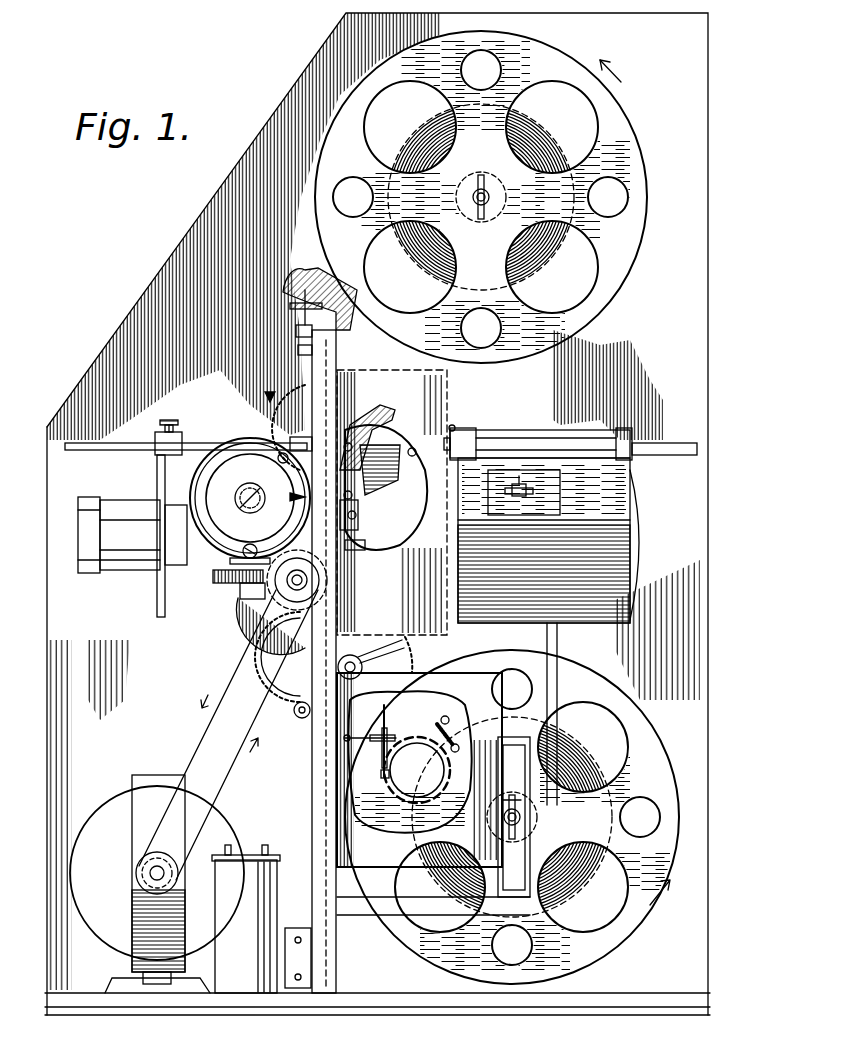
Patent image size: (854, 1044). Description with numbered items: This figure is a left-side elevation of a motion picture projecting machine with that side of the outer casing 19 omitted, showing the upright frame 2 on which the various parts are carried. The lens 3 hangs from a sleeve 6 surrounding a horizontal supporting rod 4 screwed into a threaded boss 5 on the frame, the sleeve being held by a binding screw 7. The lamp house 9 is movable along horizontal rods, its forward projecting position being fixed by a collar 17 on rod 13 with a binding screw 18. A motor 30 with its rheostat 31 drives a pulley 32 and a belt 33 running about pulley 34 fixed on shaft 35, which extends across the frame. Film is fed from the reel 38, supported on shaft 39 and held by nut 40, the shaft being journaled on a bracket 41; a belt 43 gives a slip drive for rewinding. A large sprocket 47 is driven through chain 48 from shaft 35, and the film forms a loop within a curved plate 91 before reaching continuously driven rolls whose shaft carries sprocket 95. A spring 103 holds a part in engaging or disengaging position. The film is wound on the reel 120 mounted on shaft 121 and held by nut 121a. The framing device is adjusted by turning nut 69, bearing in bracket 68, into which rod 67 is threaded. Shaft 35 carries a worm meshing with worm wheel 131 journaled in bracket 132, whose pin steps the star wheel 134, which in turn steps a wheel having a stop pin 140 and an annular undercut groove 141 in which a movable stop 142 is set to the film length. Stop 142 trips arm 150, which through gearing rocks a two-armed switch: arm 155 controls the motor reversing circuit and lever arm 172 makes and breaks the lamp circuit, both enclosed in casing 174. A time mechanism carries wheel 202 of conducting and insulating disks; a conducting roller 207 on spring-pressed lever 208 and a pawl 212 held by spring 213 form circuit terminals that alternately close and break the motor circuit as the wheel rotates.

The upright frame 2 is at (311, 788).
The lens 3 is at (132, 573).
The supporting rod 4 is at (148, 451).
The threaded boss 5 is at (292, 441).
The sleeve 6 is at (181, 438).
The binding screw 7 is at (170, 420).
The lamp house 9 is at (618, 556).
The supporting rod 13 is at (678, 444).
The collar 17 is at (464, 432).
The binding screw 18 is at (453, 425).
The outer casing 19 is at (118, 320).
The motor 30 is at (103, 804).
The rheostat 31 is at (253, 868).
The pulley 32 is at (138, 875).
The belt 33 is at (197, 737).
The pulley 34 is at (290, 592).
The shaft 35 is at (268, 640).
The reel 38 is at (617, 264).
The shaft 39 is at (489, 196).
The nut 40 is at (479, 186).
The bracket 41 is at (320, 274).
The belt 43 is at (385, 302).
The sprocket 47 is at (297, 382).
The chain 48 is at (283, 410).
The rod 67 is at (298, 350).
The bracket 68 is at (296, 332).
The nut 69 is at (298, 310).
The curved plate 91 is at (282, 672).
The sprocket 95 is at (413, 657).
The spring 103 is at (303, 738).
The reel 120 is at (612, 945).
The shaft 121 is at (524, 817).
The nut 121a is at (518, 797).
The worm wheel 131 is at (213, 582).
The bracket 132 is at (242, 596).
The star wheel 134 is at (230, 562).
The stop pin 140 is at (249, 541).
The annular undercut groove 141 is at (203, 492).
The movable stop 142 is at (280, 461).
The arm 150 is at (290, 498).
The switch arm 155 is at (356, 495).
The lever arm 172 is at (370, 420).
The casing 174 is at (440, 391).
The wheel 202 is at (438, 770).
The conducting roller 207 is at (382, 775).
The lever 208 is at (384, 756).
The pawl 212 is at (420, 738).
The spring 213 is at (452, 742).